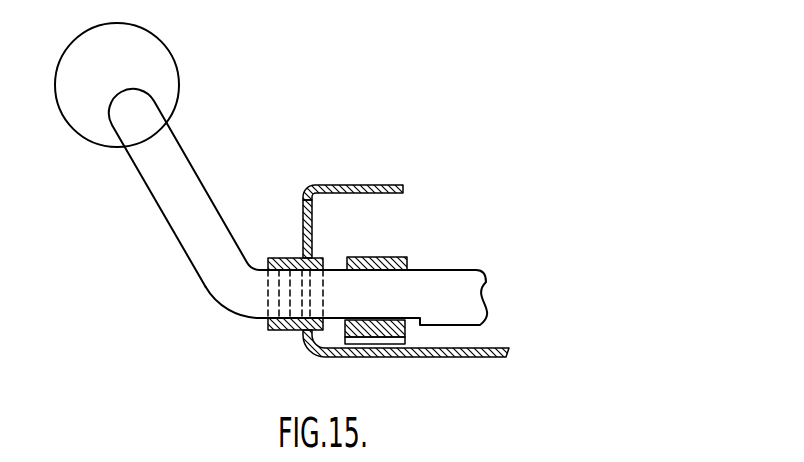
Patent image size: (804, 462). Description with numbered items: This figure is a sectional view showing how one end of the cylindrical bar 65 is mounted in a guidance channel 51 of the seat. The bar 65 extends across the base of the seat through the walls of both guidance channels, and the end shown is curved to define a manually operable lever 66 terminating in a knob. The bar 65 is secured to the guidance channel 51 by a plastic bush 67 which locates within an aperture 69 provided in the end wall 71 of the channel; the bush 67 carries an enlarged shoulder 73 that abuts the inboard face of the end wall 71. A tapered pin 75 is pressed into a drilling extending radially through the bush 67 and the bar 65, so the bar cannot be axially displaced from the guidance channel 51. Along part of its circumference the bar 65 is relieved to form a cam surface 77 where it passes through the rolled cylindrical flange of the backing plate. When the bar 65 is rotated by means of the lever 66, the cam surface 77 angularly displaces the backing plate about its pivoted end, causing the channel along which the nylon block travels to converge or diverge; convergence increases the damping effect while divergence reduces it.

The guidance channel 51 is at (365, 186).
The cylindrical bar 65 is at (458, 288).
The manually operable lever 66 is at (183, 162).
The plastic bush 67 is at (315, 258).
The aperture 69 is at (296, 340).
The end wall 71 is at (303, 210).
The enlarged shoulder 73 is at (326, 330).
The tapered pin 75 is at (283, 296).
The cam surface 77 is at (395, 345).